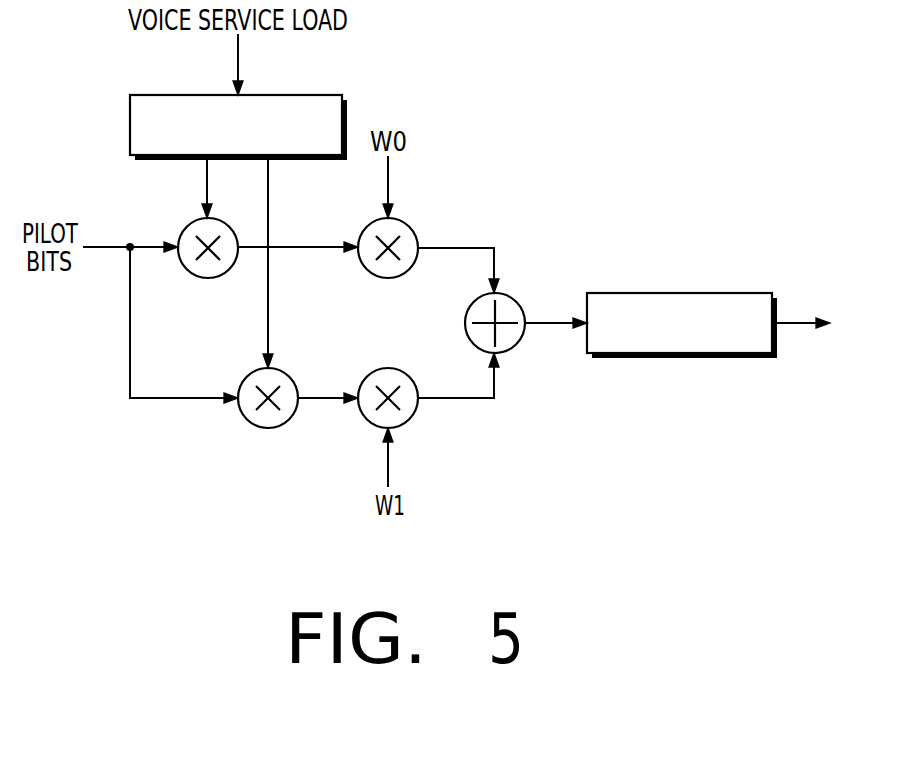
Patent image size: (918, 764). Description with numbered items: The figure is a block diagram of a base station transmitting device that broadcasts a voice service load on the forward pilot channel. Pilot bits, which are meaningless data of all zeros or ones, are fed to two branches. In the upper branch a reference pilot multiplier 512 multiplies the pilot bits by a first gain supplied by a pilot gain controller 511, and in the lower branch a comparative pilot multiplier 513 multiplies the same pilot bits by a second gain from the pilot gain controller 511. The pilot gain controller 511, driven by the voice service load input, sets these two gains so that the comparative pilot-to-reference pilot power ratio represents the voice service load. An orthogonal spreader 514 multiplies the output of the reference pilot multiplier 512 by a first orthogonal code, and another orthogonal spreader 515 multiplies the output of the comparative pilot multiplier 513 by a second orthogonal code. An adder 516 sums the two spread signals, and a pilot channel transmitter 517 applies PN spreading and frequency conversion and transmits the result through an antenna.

The pilot gain controller 511 is at (130, 125).
The reference pilot multiplier 512 is at (186, 226).
The comparative pilot multiplier 513 is at (291, 376).
The orthogonal spreader 514 is at (412, 229).
The orthogonal spreader 515 is at (409, 374).
The adder 516 is at (508, 292).
The pilot channel transmitter 517 is at (680, 293).